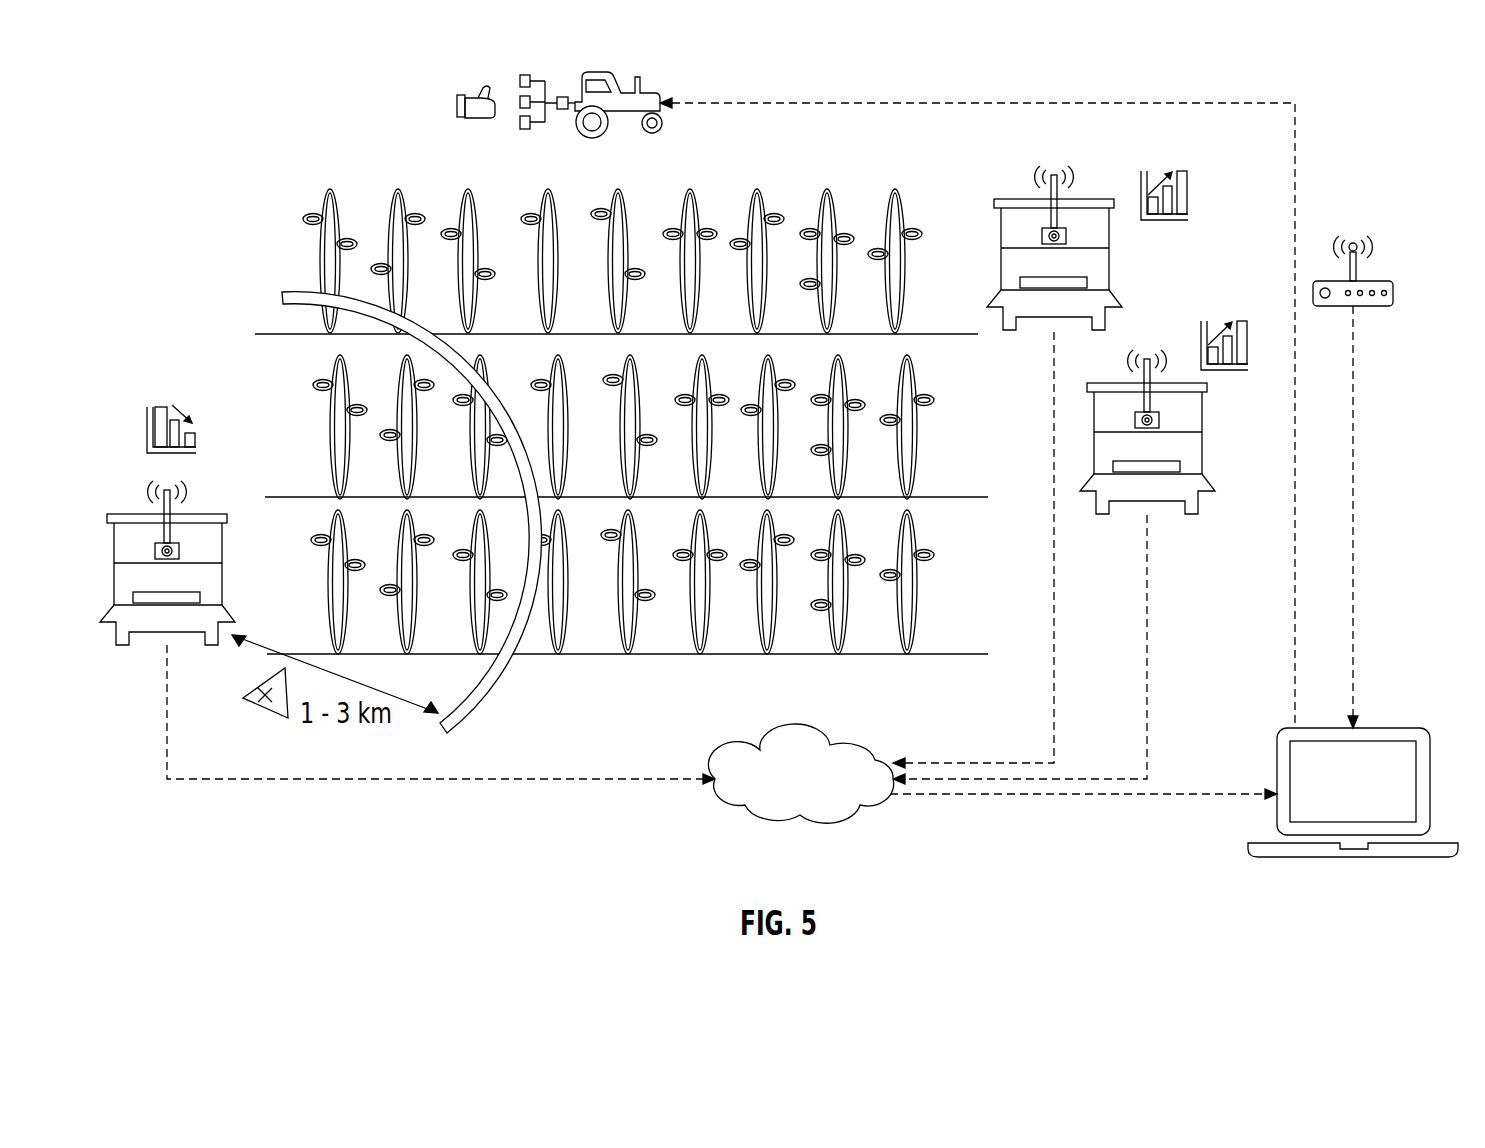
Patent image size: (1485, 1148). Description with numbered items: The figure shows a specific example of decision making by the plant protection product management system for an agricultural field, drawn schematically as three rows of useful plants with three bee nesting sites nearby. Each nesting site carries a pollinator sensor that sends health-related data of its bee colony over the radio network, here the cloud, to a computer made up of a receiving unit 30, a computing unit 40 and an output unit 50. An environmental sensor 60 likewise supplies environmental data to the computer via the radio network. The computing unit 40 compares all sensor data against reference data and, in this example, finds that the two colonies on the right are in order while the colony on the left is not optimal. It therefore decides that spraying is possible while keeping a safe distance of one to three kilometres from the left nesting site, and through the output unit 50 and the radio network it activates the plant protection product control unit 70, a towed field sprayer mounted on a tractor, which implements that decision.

The receiving unit 30 is at (1359, 759).
The computing unit 40 is at (1359, 759).
The output unit 50 is at (1415, 692).
The environmental sensor 60 is at (1393, 293).
The plant protection product control unit 70 is at (628, 117).